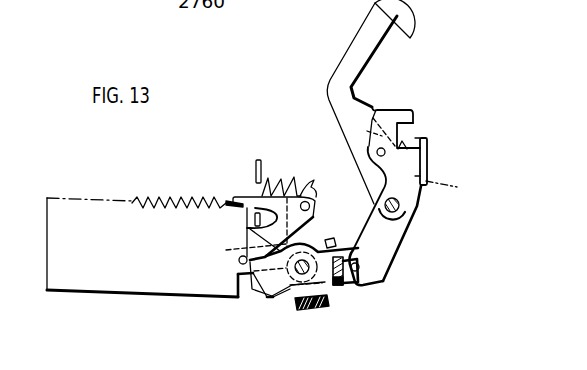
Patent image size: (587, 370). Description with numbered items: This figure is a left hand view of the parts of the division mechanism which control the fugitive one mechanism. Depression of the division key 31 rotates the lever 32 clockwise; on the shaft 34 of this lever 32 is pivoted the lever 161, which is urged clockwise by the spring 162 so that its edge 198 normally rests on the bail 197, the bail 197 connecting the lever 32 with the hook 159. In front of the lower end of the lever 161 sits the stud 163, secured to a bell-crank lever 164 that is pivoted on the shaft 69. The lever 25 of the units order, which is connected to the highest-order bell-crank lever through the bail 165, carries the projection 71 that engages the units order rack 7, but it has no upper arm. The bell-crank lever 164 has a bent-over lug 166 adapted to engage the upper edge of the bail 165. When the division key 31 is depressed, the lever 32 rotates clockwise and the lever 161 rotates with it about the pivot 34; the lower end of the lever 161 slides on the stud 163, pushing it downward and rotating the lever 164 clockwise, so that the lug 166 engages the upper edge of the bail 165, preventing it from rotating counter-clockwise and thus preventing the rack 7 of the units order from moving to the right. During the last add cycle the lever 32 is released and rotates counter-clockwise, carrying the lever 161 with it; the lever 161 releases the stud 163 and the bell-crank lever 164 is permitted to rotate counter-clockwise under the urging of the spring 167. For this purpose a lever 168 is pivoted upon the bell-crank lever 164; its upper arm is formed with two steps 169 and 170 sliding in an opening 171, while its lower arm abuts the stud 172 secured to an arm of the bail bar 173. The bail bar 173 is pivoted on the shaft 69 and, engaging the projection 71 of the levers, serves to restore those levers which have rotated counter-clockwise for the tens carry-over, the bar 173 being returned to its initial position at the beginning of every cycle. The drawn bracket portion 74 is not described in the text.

The units order rack 7 is at (135, 283).
The lever of the units order 25 is at (277, 298).
The division key 31 is at (415, 9).
The lever of the division key 32 is at (360, 63).
The shaft 34 is at (401, 206).
The shaft 69 is at (323, 204).
The projection 71 is at (263, 293).
The bracket flange 74 is at (245, 292).
The hook 159 is at (407, 110).
The lever 161 is at (384, 250).
The spring 162 is at (413, 138).
The stud 163 is at (384, 281).
The bell-crank lever 164 is at (350, 286).
The bail 165 is at (343, 290).
The bent-over lug 166 is at (333, 240).
The spring 167 is at (301, 182).
The lever 168 is at (278, 196).
The step 169 is at (262, 207).
The step 170 is at (255, 205).
The opening 171 is at (259, 180).
The stud 172 is at (238, 261).
The bail bar 173 is at (310, 311).
The bail 197 is at (431, 152).
The edge 198 is at (457, 189).